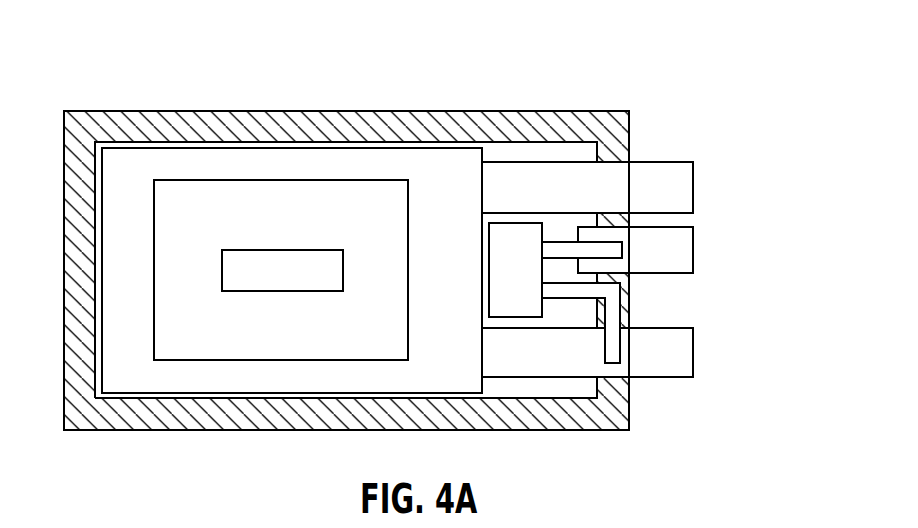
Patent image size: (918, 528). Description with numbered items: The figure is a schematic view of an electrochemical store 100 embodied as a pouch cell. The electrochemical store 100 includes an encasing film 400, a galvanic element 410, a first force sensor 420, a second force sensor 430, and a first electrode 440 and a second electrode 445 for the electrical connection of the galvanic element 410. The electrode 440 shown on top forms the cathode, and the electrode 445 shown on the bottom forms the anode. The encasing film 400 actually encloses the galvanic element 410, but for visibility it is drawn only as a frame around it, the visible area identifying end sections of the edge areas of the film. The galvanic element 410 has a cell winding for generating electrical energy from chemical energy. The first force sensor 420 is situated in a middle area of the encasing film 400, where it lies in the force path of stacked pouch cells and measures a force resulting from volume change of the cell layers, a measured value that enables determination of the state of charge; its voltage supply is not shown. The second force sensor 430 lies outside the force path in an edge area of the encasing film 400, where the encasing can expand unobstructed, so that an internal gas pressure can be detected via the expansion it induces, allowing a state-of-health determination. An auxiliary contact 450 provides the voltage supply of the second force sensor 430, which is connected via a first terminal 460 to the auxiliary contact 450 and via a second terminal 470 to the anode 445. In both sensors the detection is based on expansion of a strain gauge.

The electrochemical store 100 is at (421, 233).
The encasing film 400 is at (148, 120).
The galvanic element 410 is at (240, 148).
The first force sensor 420 is at (298, 250).
The second force sensor 430 is at (512, 223).
The first electrode 440 is at (672, 188).
The second electrode 445 is at (672, 353).
The auxiliary contact 450 is at (672, 250).
The first terminal 460 is at (617, 250).
The second terminal 470 is at (613, 357).